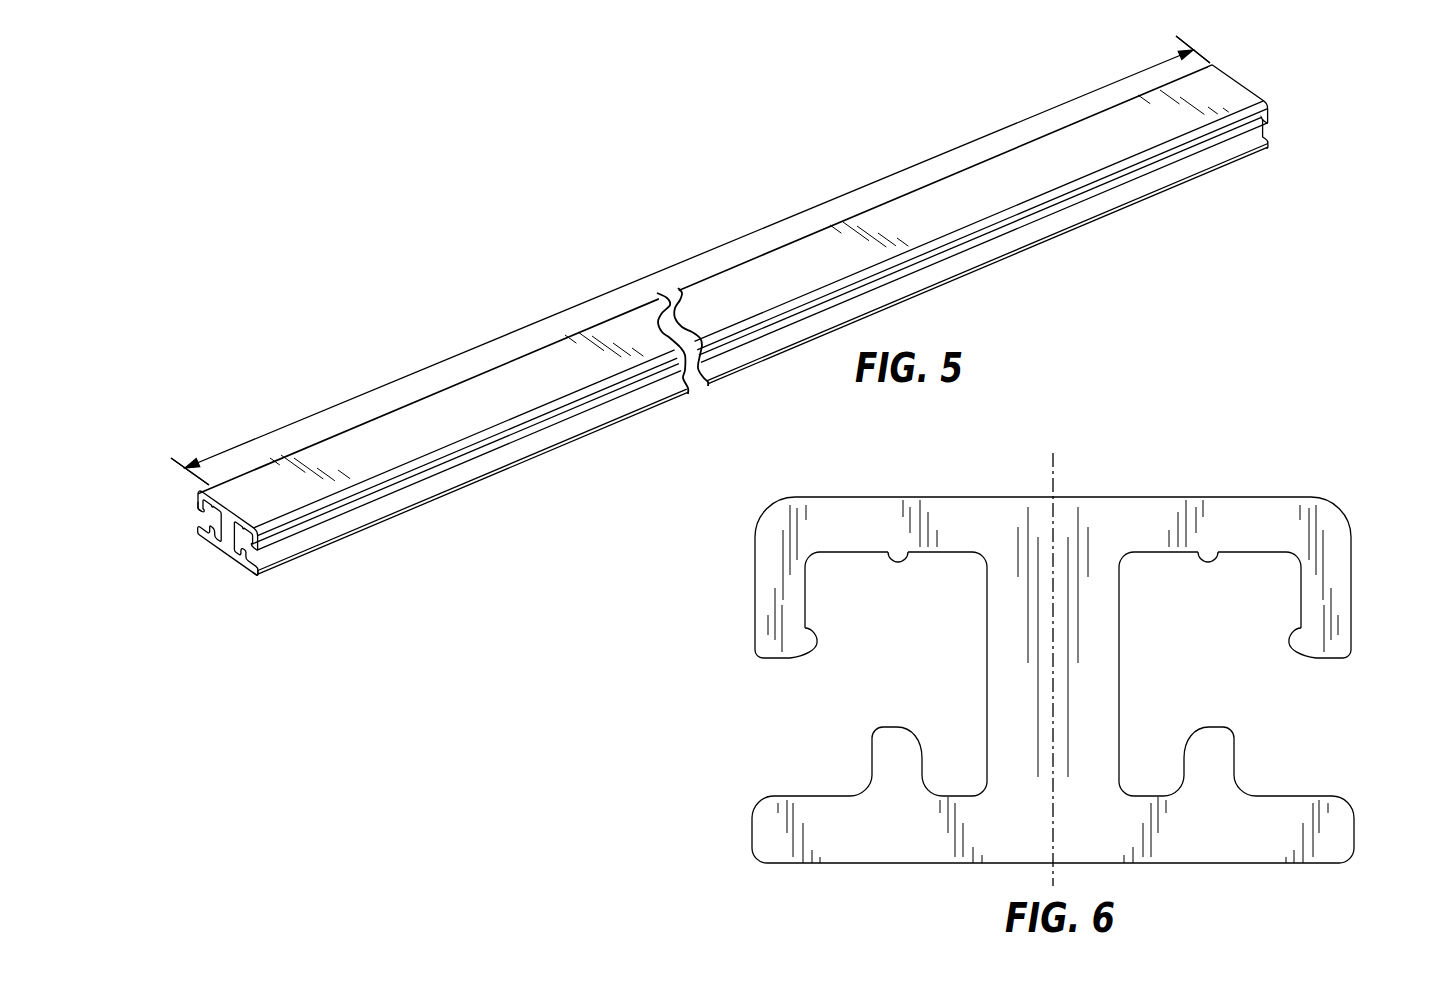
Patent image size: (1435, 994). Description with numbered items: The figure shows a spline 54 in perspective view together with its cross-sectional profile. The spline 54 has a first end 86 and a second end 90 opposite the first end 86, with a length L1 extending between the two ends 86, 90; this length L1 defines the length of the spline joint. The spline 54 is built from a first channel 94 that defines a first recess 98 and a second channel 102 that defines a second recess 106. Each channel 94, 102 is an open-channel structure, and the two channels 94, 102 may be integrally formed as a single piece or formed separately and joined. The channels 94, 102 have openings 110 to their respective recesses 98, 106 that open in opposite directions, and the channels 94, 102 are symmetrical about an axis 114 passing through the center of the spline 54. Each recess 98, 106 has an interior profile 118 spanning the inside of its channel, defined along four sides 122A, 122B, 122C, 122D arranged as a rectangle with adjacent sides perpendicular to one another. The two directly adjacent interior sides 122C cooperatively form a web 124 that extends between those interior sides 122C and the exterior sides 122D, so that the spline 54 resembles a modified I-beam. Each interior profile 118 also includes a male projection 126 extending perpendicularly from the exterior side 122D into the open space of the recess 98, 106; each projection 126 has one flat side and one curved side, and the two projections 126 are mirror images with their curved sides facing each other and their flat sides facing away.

In FIG. 5, the spline 54 is at (627, 195).
In FIG. 6, the spline 54 is at (1103, 429).
In FIG. 5, the first end 86 is at (180, 456).
In FIG. 5, the second end 90 is at (1177, 38).
In FIG. 5, the length L1 is at (690, 260).
In FIG. 5, the first channel 94 is at (189, 515).
In FIG. 6, the first channel 94 is at (840, 508).
In FIG. 6, the first recess 98 is at (893, 558).
In FIG. 5, the second channel 102 is at (297, 572).
In FIG. 6, the second channel 102 is at (1265, 510).
In FIG. 6, the second recess 106 is at (1218, 553).
In FIG. 6, the openings 110 is at (783, 797).
In FIG. 6, the axis 114 is at (1050, 474).
In FIG. 6, the interior profile 118 is at (815, 643).
In FIG. 6, the side 122A is at (765, 585).
In FIG. 6, the side 122B is at (962, 553).
In FIG. 6, the side arranged toward the interior 122C is at (1013, 650).
In FIG. 6, the exterior side 122D is at (875, 842).
In FIG. 6, the web 124 is at (1083, 515).
In FIG. 6, the male projection 126 is at (892, 765).